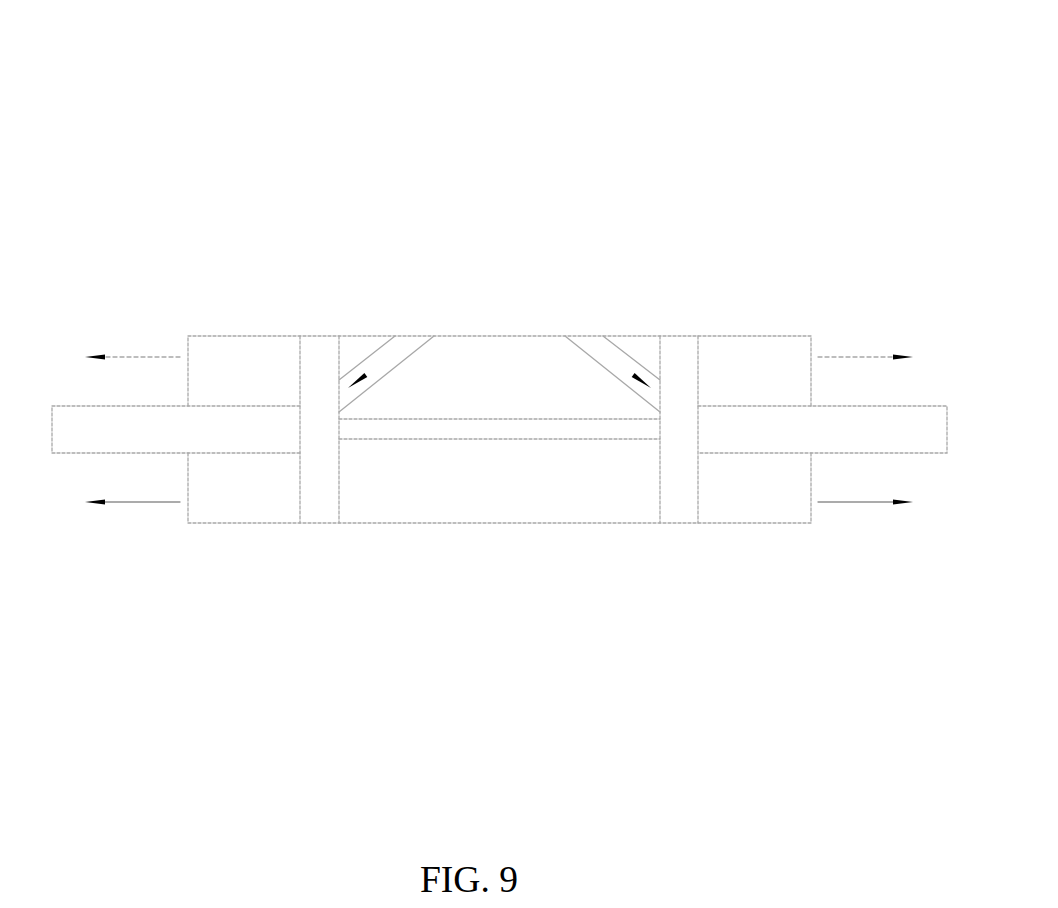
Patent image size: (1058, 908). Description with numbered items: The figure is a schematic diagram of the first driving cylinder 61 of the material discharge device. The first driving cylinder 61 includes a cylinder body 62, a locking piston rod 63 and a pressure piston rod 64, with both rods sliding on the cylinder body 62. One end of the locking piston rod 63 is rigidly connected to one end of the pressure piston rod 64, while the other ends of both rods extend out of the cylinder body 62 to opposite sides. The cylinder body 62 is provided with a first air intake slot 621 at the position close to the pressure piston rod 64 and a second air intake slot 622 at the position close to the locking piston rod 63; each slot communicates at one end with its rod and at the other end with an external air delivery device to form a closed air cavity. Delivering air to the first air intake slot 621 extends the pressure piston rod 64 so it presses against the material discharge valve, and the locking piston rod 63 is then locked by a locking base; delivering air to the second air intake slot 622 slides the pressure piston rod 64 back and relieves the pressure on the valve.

The first driving cylinder 61 is at (493, 302).
The cylinder body 62 is at (526, 495).
The first air intake slot 621 is at (590, 343).
The second air intake slot 622 is at (412, 343).
The locking piston rod 63 is at (237, 426).
The pressure piston rod 64 is at (767, 429).